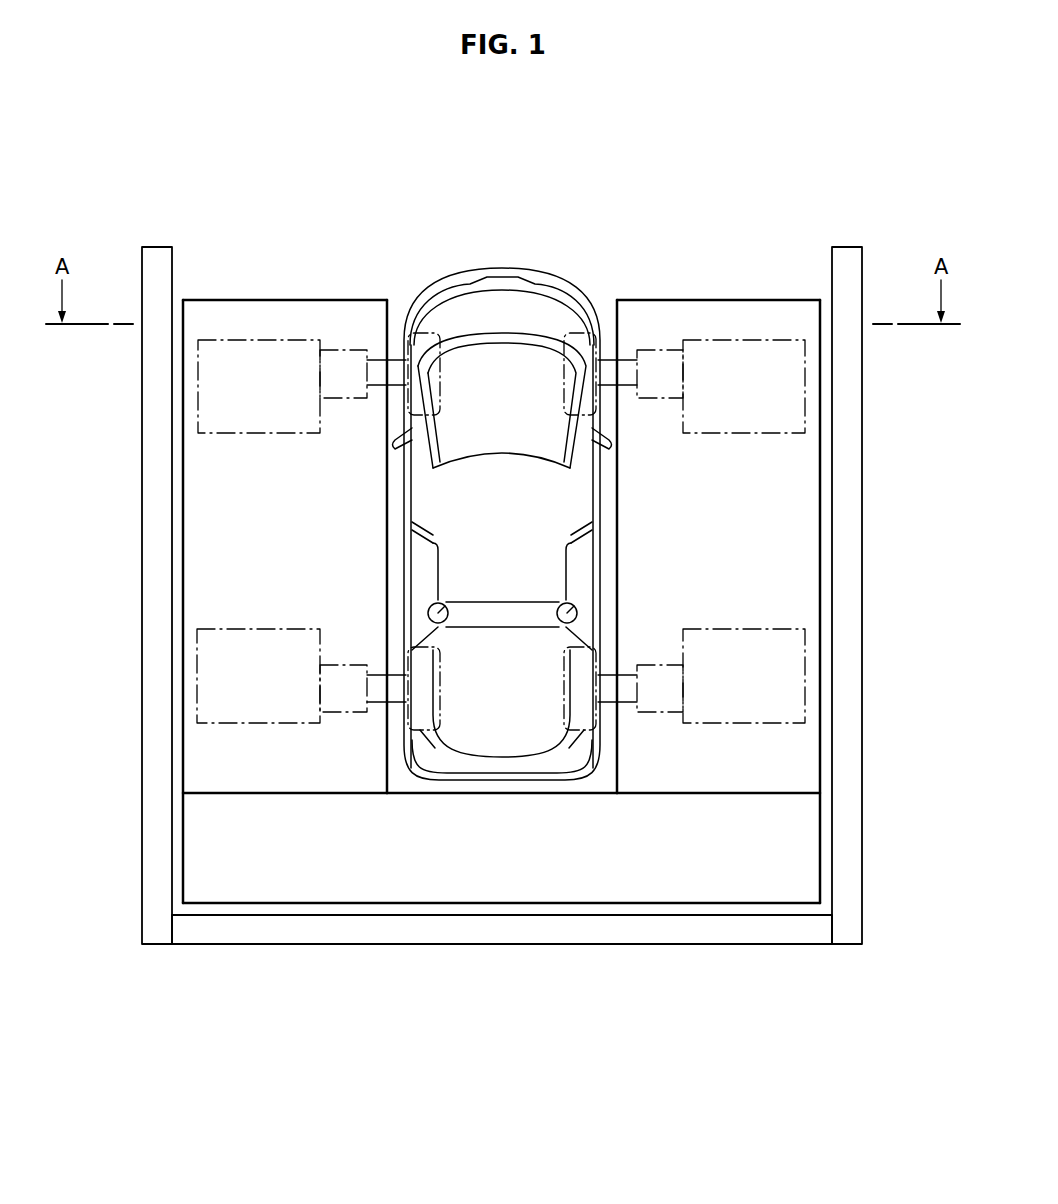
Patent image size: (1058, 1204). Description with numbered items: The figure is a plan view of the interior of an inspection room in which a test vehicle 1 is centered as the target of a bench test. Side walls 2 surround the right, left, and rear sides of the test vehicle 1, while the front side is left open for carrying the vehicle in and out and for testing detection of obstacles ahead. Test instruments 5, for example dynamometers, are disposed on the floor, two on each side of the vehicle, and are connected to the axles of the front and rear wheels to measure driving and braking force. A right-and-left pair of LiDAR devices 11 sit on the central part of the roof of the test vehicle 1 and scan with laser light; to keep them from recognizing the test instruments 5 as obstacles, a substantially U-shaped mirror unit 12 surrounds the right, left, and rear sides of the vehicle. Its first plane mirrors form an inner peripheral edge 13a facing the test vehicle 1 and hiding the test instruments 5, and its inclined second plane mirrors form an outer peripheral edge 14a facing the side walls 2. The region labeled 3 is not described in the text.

The test vehicle 1 is at (580, 273).
The side walls 2 is at (157, 670).
The platform 3 is at (330, 273).
The test instruments 5 is at (247, 433).
The LiDAR devices 11 is at (565, 603).
The mirror unit 12 is at (782, 769).
The inner peripheral edge 13a is at (389, 485).
The outer peripheral edge 14a is at (180, 510).